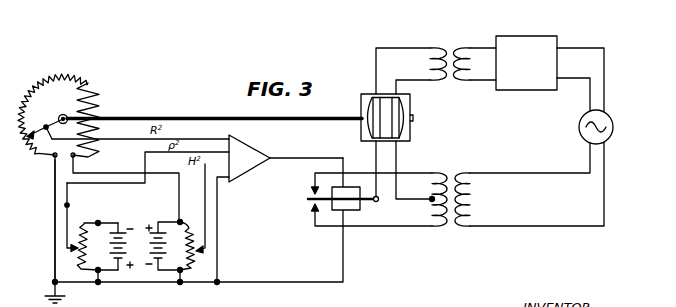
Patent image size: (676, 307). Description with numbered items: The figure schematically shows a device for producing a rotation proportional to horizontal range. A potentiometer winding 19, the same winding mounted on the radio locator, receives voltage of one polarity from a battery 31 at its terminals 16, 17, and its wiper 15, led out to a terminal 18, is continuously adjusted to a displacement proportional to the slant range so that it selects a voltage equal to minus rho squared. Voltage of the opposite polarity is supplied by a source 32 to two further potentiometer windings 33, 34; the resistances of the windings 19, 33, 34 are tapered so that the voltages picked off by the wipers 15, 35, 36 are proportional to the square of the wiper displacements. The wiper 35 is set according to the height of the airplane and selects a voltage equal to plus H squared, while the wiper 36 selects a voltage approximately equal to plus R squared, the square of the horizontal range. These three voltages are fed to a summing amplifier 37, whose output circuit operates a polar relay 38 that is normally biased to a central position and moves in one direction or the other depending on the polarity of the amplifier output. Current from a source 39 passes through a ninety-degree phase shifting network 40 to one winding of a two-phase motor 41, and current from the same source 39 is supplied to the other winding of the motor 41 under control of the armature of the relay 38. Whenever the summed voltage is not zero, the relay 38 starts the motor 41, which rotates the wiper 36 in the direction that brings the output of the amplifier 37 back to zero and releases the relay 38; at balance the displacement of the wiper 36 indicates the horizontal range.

The wiper 15 is at (65, 231).
The terminal 16 is at (98, 222).
The terminal 17 is at (100, 274).
The terminal 18 is at (66, 205).
The potentiometer winding 19 is at (84, 232).
The battery 31 is at (117, 230).
The source 32 is at (145, 232).
The potentiometer winding 33 is at (195, 232).
The potentiometer winding 34 is at (102, 90).
The wiper 35 is at (206, 215).
The wiper 36 is at (46, 125).
The summing amplifier 37 is at (244, 143).
The polar relay 38 is at (353, 207).
The source 39 is at (614, 127).
The 90-degree phase shifting network 40 is at (525, 36).
The two-phase motor 41 is at (411, 141).